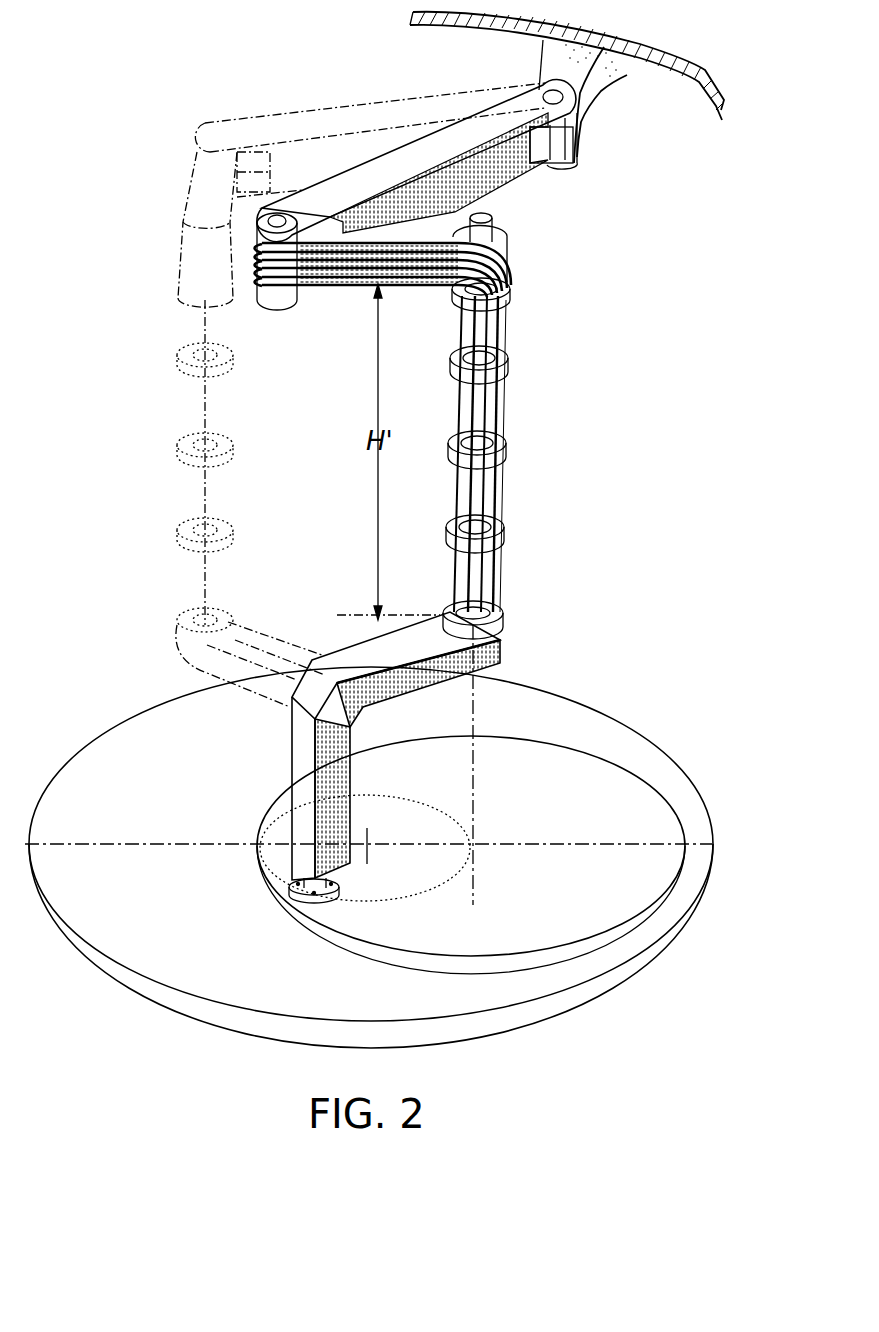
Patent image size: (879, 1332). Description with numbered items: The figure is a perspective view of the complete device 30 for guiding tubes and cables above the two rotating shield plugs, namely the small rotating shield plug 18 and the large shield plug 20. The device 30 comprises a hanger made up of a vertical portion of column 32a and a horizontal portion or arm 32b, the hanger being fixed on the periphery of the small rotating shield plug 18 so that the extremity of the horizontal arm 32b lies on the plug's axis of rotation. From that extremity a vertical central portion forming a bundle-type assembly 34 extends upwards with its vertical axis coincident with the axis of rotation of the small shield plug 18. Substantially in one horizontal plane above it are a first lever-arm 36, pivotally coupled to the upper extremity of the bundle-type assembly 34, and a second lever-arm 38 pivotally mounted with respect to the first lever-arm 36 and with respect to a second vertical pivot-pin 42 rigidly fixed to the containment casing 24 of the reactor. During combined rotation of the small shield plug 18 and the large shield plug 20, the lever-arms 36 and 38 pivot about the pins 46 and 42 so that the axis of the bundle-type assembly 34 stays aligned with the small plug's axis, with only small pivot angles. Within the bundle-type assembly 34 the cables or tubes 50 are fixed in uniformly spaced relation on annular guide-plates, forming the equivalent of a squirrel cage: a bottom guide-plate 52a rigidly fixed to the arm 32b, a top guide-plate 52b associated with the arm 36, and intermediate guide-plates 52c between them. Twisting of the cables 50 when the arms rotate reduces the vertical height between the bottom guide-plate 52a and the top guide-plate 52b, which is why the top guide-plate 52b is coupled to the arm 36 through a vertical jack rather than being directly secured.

The small rotating shield plug 18 is at (270, 810).
The large shield plug 20 is at (121, 737).
The containment casing 24 is at (438, 82).
The device for guiding tubes and cables 30 is at (555, 483).
The vertical portion of column 32a is at (303, 848).
The horizontal portion or arm 32b is at (397, 680).
The bundle-type assembly 34 is at (524, 483).
The first lever-arm 36 is at (445, 228).
The second lever-arm 38 is at (407, 160).
The second vertical pivot-pin 42 is at (594, 86).
The pin 46 is at (272, 219).
The cables or tubes 50 is at (503, 563).
The bottom guide-plate 52a is at (500, 627).
The top guide-plate 52b is at (508, 292).
The intermediate guide-plates 52c is at (505, 528).